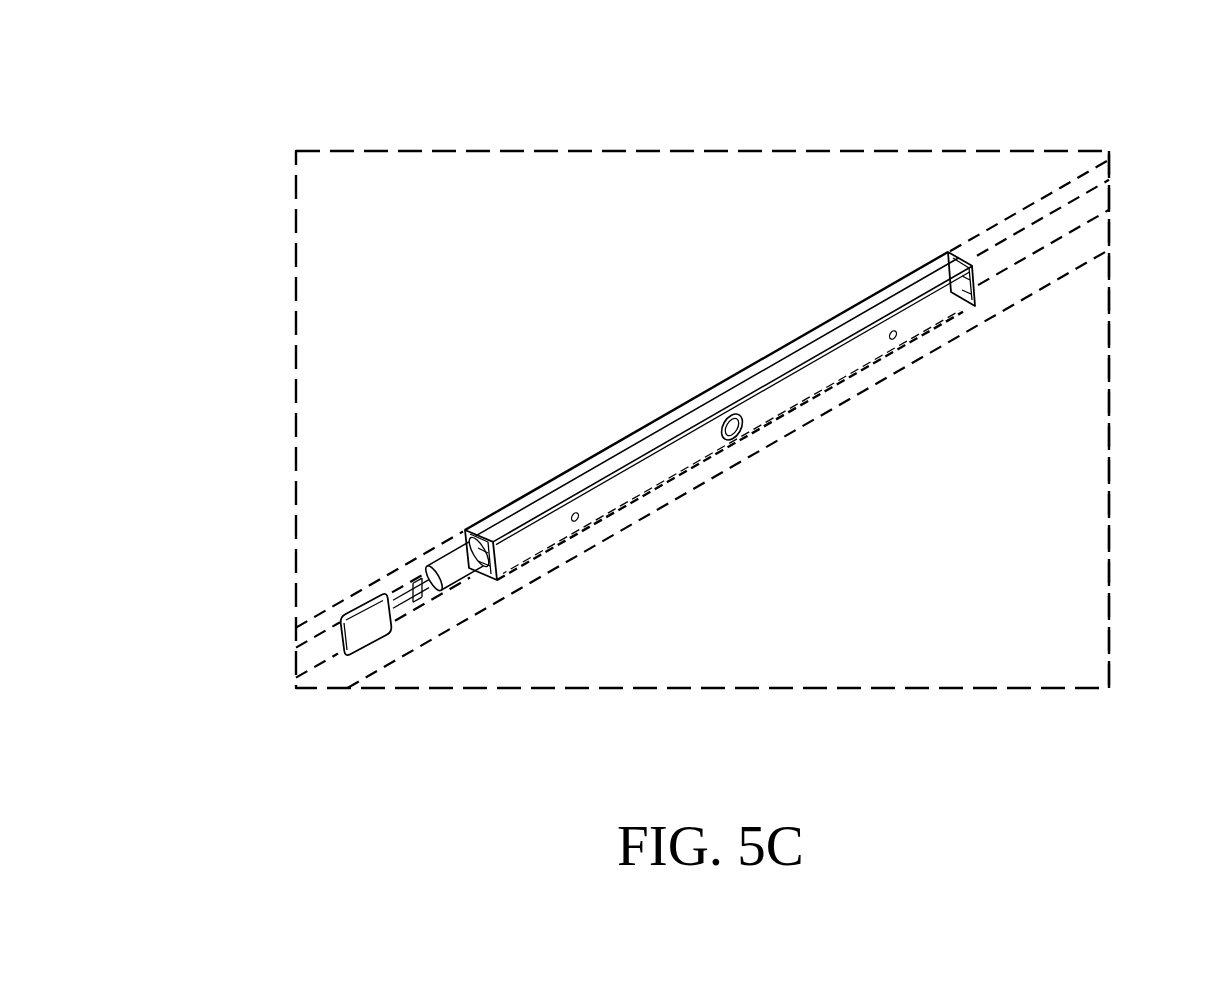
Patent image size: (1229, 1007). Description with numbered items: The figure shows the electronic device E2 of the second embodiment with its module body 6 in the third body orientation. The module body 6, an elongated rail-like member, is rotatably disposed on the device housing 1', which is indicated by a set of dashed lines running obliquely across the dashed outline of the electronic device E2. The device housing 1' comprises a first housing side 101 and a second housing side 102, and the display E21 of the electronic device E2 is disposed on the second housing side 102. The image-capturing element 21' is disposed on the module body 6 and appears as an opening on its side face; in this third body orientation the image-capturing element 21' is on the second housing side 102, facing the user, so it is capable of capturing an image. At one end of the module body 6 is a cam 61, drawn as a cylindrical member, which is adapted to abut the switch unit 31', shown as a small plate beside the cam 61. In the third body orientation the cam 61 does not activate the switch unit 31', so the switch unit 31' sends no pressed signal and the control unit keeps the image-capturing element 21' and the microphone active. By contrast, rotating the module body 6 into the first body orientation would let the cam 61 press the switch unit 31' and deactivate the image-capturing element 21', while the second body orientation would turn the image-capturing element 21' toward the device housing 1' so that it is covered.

The electronic device E2 is at (168, 57).
The display E21 is at (1085, 433).
The first housing side 101 is at (1005, 213).
The device housing 1' is at (702, 374).
The second housing side 102 is at (1094, 230).
The module body 6 is at (848, 322).
The image-capturing element 21' is at (731, 375).
The cam 61 is at (463, 574).
The switch unit 31' is at (326, 594).